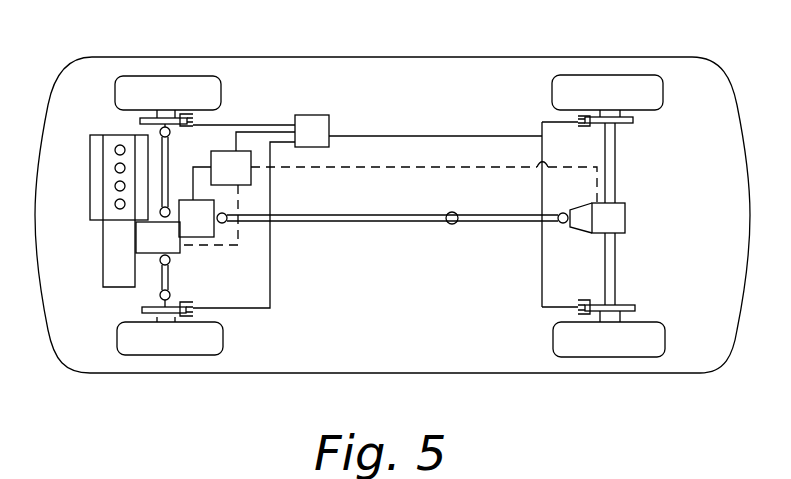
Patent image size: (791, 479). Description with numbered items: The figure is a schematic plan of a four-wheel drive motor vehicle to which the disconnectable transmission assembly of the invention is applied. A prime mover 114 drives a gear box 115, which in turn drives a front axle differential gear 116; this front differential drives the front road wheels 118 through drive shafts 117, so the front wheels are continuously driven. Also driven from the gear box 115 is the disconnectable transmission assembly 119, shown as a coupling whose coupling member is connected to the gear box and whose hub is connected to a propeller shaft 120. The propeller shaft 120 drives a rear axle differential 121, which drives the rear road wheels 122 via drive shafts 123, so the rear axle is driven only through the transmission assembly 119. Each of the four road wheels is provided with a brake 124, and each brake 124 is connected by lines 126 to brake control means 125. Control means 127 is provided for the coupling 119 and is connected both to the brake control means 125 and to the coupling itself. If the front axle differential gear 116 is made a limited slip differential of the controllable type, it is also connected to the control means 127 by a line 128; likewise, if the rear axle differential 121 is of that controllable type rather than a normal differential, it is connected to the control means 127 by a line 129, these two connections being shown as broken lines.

The prime mover 114 is at (110, 140).
The gear box 115 is at (112, 264).
The front axle differential gear 116 is at (173, 249).
The drive shafts 117 is at (168, 170).
The front road wheels 118 is at (142, 83).
The disconnectable transmission assembly 119 is at (210, 229).
The propeller shaft 120 is at (385, 223).
The rear axle differential 121 is at (621, 217).
The rear road wheels 122 is at (620, 85).
The drive shafts 123 is at (614, 163).
The brake 124 is at (180, 115).
The brake control means 125 is at (321, 115).
The lines 126 is at (246, 122).
The control means 127 is at (246, 180).
The line 128 is at (226, 245).
The line 129 is at (397, 168).